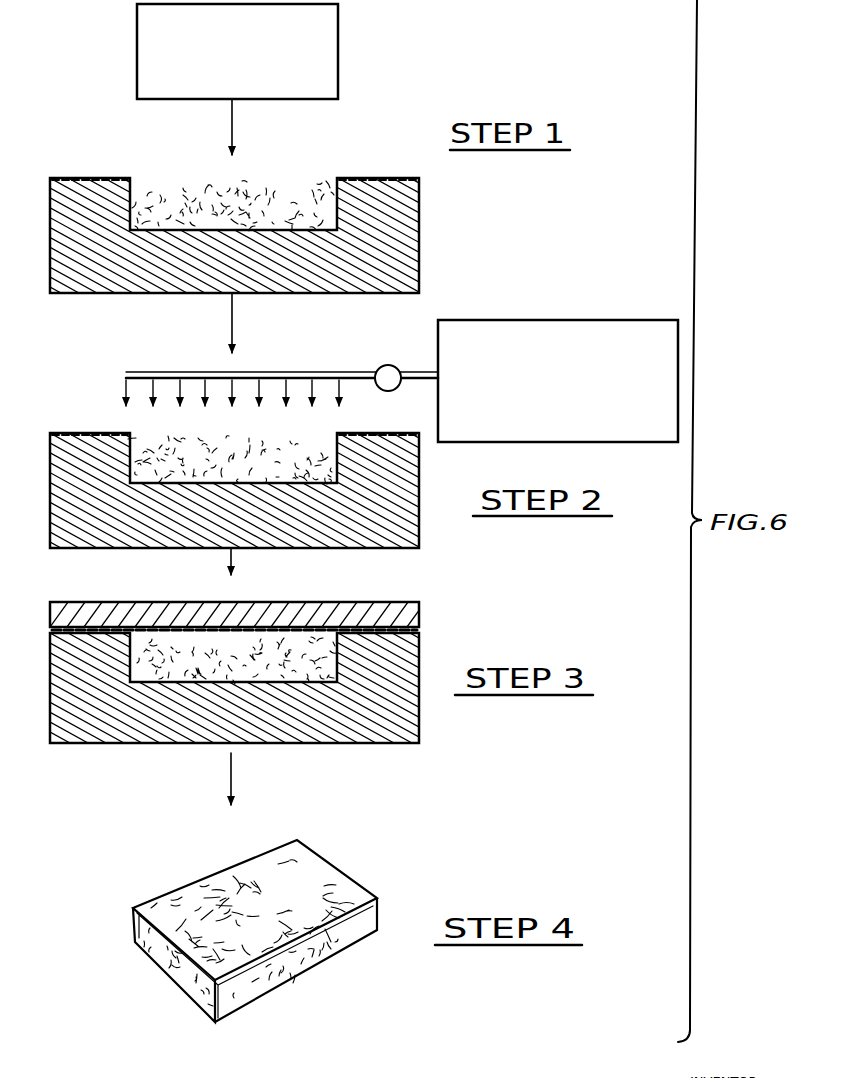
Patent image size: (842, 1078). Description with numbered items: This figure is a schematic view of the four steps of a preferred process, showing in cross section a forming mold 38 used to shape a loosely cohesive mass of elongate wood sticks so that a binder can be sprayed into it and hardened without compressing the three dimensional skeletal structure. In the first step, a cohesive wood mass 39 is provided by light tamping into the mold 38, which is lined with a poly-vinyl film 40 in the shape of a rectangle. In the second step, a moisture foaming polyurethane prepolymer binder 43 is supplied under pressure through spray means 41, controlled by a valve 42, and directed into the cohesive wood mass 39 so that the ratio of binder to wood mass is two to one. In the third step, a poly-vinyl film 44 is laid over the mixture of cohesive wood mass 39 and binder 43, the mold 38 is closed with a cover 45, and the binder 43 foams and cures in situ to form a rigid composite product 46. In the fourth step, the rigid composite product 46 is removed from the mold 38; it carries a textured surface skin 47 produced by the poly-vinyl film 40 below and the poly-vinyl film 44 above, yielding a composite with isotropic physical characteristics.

The mold 38 is at (66, 243).
The cohesive wood mass 39 is at (322, 48).
The poly-vinyl film 40 is at (395, 178).
The spray means 41 is at (140, 372).
The valve 42 is at (383, 365).
The moisture foaming polyurethane prepolymer binder 43 is at (594, 337).
The poly-vinyl film 44 is at (405, 626).
The cover 45 is at (318, 608).
The rigid composite product 46 is at (295, 662).
The textured surface skin 47 is at (290, 958).